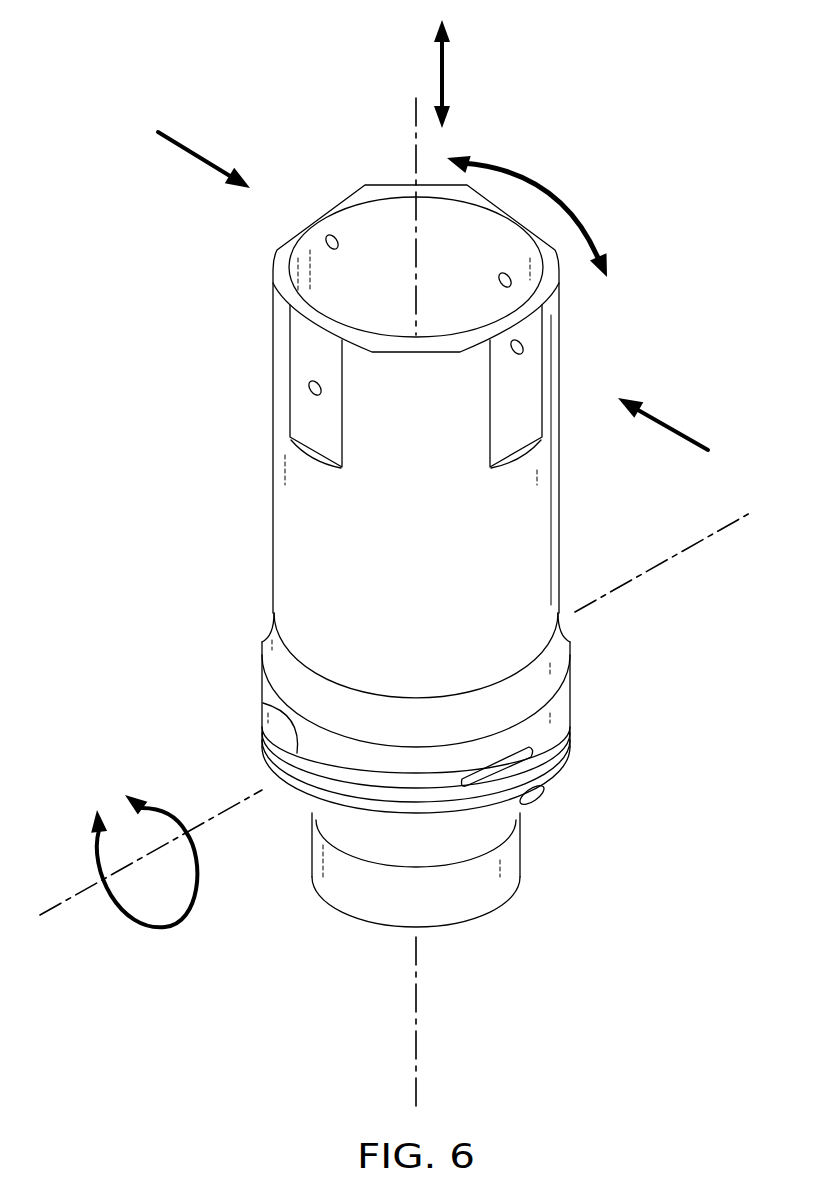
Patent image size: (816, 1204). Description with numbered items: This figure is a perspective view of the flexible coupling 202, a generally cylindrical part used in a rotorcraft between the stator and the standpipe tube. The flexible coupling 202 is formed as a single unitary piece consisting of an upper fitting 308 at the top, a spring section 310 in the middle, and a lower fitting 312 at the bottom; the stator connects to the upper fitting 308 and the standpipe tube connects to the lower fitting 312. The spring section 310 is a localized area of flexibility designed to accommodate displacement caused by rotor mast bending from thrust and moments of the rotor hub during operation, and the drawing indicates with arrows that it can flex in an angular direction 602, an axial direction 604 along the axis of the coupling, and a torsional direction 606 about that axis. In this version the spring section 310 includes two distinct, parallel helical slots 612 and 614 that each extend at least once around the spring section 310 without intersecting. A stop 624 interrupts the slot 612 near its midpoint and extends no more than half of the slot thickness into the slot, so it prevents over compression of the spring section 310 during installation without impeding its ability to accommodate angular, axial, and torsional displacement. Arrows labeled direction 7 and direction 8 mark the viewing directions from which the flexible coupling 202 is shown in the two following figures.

The flexible coupling 202 is at (140, 347).
The upper fitting 308 is at (273, 467).
The spring section 310 is at (560, 693).
The lower fitting 312 is at (492, 912).
The angular direction 602 is at (157, 930).
The axial direction 604 is at (444, 72).
The torsional direction 606 is at (565, 192).
The slot 612 is at (263, 702).
The slot 614 is at (563, 760).
The stop 624 is at (537, 790).
The direction 7 is at (195, 150).
The direction 8 is at (675, 437).